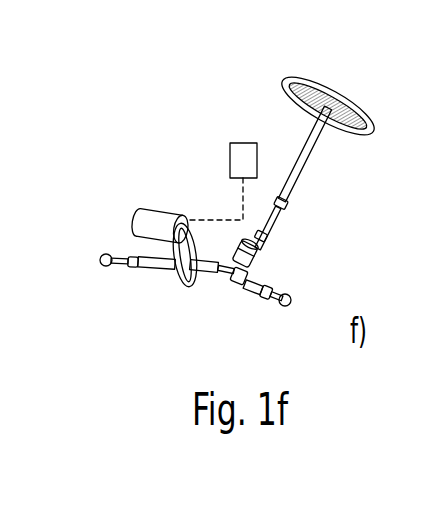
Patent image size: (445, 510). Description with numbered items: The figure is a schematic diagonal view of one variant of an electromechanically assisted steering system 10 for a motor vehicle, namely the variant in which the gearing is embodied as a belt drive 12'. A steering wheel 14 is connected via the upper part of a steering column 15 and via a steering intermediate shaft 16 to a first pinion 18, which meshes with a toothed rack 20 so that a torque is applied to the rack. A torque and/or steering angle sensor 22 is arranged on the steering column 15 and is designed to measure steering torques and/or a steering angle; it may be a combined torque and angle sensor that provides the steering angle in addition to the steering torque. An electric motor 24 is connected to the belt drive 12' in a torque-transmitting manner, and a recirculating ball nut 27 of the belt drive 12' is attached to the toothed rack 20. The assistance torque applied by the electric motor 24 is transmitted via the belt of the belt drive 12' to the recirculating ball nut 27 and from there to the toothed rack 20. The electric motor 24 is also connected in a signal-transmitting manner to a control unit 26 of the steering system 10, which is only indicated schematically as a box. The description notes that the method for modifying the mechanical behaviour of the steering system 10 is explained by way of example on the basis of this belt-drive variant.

The steering system 10 is at (177, 114).
The belt drive 12' is at (194, 305).
The steering wheel 14 is at (352, 103).
The steering column 15 is at (321, 137).
The steering intermediate shaft 16 is at (272, 225).
The first pinion 18 is at (240, 290).
The toothed rack 20 is at (147, 262).
The torque and/or steering angle sensor 22 is at (258, 266).
The electric motor 24 is at (156, 210).
The control unit 26 is at (241, 143).
The recirculating ball nut 27 is at (173, 272).